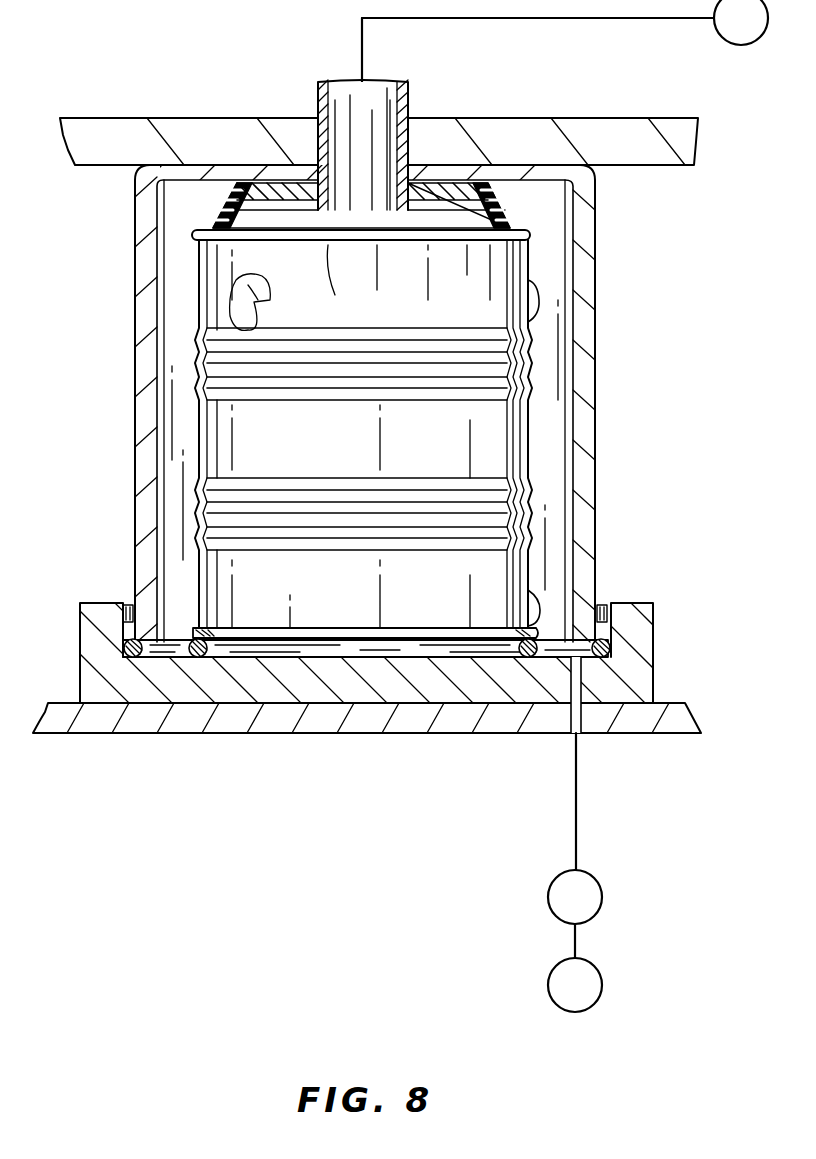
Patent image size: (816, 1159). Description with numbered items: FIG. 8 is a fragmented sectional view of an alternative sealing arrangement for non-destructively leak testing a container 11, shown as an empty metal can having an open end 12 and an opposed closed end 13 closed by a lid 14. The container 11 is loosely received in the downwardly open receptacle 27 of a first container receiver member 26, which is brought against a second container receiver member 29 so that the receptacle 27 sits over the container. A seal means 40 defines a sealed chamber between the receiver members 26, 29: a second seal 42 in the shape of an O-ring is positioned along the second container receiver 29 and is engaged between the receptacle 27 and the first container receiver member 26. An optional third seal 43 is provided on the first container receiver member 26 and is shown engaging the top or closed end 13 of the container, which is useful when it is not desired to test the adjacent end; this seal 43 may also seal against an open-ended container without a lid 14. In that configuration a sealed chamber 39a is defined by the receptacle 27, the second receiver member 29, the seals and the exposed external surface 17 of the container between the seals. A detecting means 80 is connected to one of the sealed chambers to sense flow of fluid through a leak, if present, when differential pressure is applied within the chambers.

The container 11 is at (363, 434).
The open end 12 is at (527, 595).
The closed end 13 is at (533, 238).
The lid 14 is at (330, 245).
The external surface 17 is at (533, 300).
The first container receiver member 26 is at (651, 165).
The receptacle 27 is at (590, 340).
The second container receiver member 29 is at (655, 617).
The sealed chamber 39a is at (548, 420).
The seal means 40 is at (345, 625).
The second seal 42 is at (612, 655).
The third seal 43 is at (496, 215).
The detecting means 80 is at (724, 42).